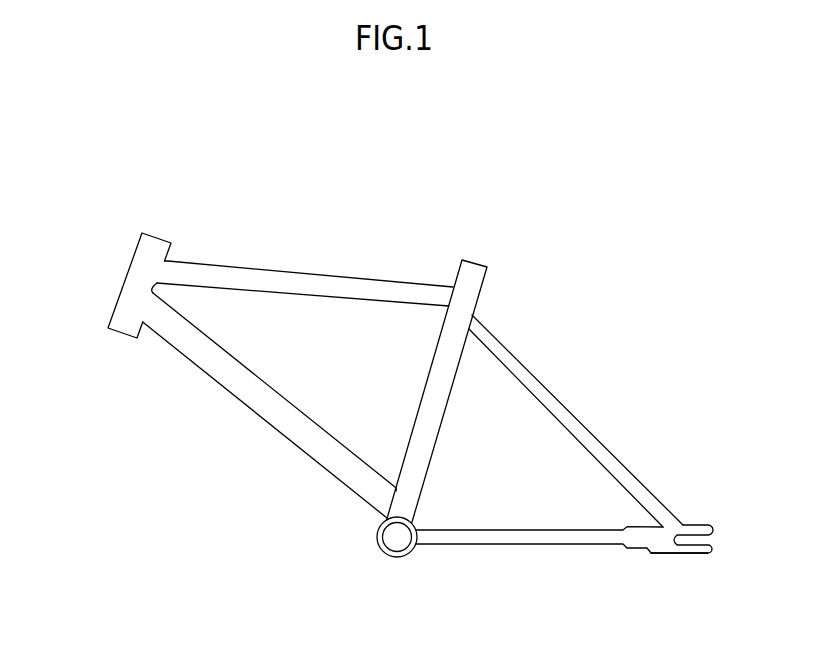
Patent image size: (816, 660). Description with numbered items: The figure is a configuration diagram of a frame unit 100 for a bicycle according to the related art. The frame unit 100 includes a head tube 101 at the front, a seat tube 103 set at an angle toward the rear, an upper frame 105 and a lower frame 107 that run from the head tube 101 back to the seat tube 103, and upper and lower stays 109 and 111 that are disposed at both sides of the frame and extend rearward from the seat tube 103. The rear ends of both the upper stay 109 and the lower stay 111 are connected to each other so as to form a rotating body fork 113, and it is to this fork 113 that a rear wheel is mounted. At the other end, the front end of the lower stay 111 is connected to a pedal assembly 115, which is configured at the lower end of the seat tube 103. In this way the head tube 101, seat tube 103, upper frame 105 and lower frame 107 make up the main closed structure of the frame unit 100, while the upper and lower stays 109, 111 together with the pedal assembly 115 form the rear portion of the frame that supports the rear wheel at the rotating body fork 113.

The frame unit 100 is at (590, 271).
The head tube 101 is at (132, 278).
The seat tube 103 is at (472, 264).
The upper frame 105 is at (282, 270).
The lower frame 107 is at (280, 422).
The upper stay 109 is at (587, 433).
The lower stay 111 is at (520, 540).
The rotating body fork 113 is at (695, 528).
The pedal assembly 115 is at (385, 550).